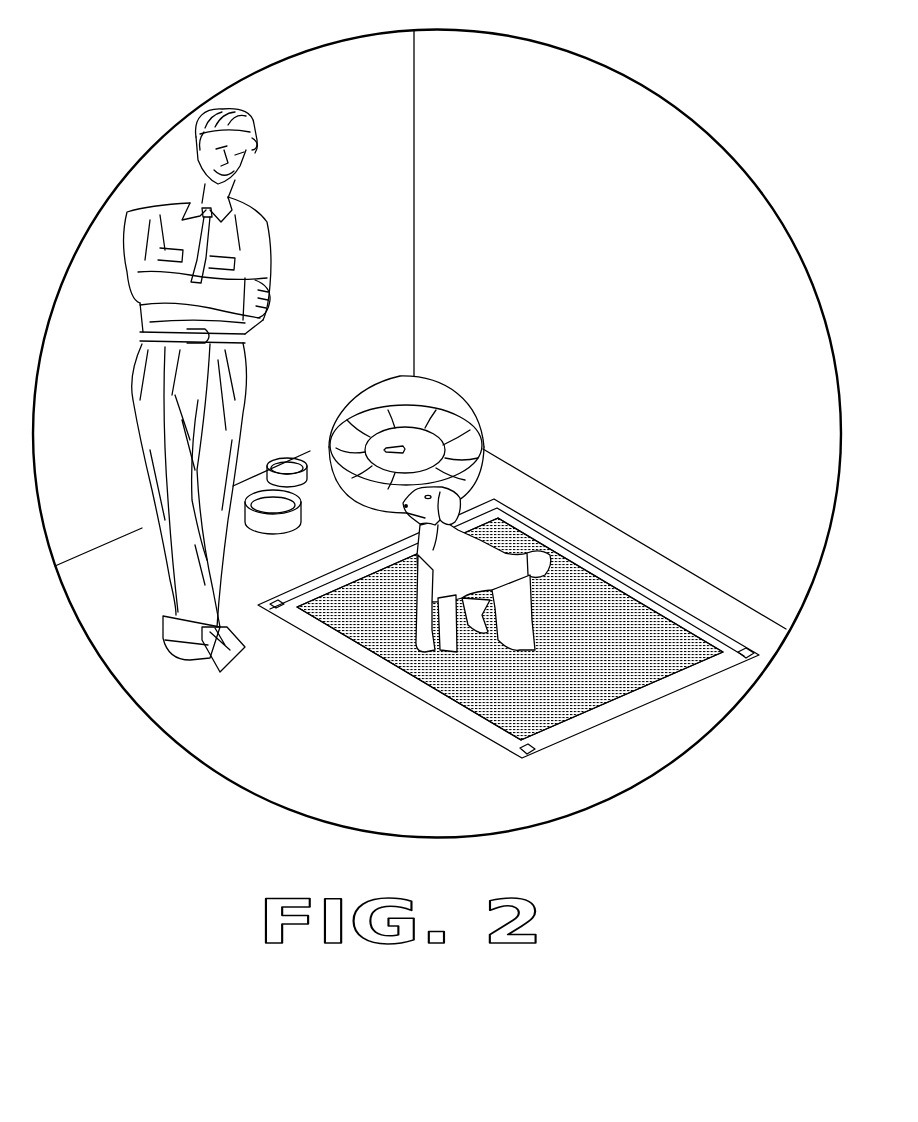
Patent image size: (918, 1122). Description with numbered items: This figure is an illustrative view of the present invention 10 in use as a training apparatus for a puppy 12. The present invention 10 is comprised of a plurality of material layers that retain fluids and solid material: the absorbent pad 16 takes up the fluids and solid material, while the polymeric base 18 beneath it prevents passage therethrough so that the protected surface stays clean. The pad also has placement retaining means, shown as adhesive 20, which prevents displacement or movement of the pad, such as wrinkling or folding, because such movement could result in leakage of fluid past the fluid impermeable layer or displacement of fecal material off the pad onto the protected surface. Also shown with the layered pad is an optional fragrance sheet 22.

The present invention 10 is at (730, 540).
The puppy 12 is at (480, 553).
The absorbent pad 16 is at (530, 554).
The polymeric base 18 is at (599, 567).
The adhesive 20 is at (514, 755).
The fragrance sheet 22 is at (444, 693).